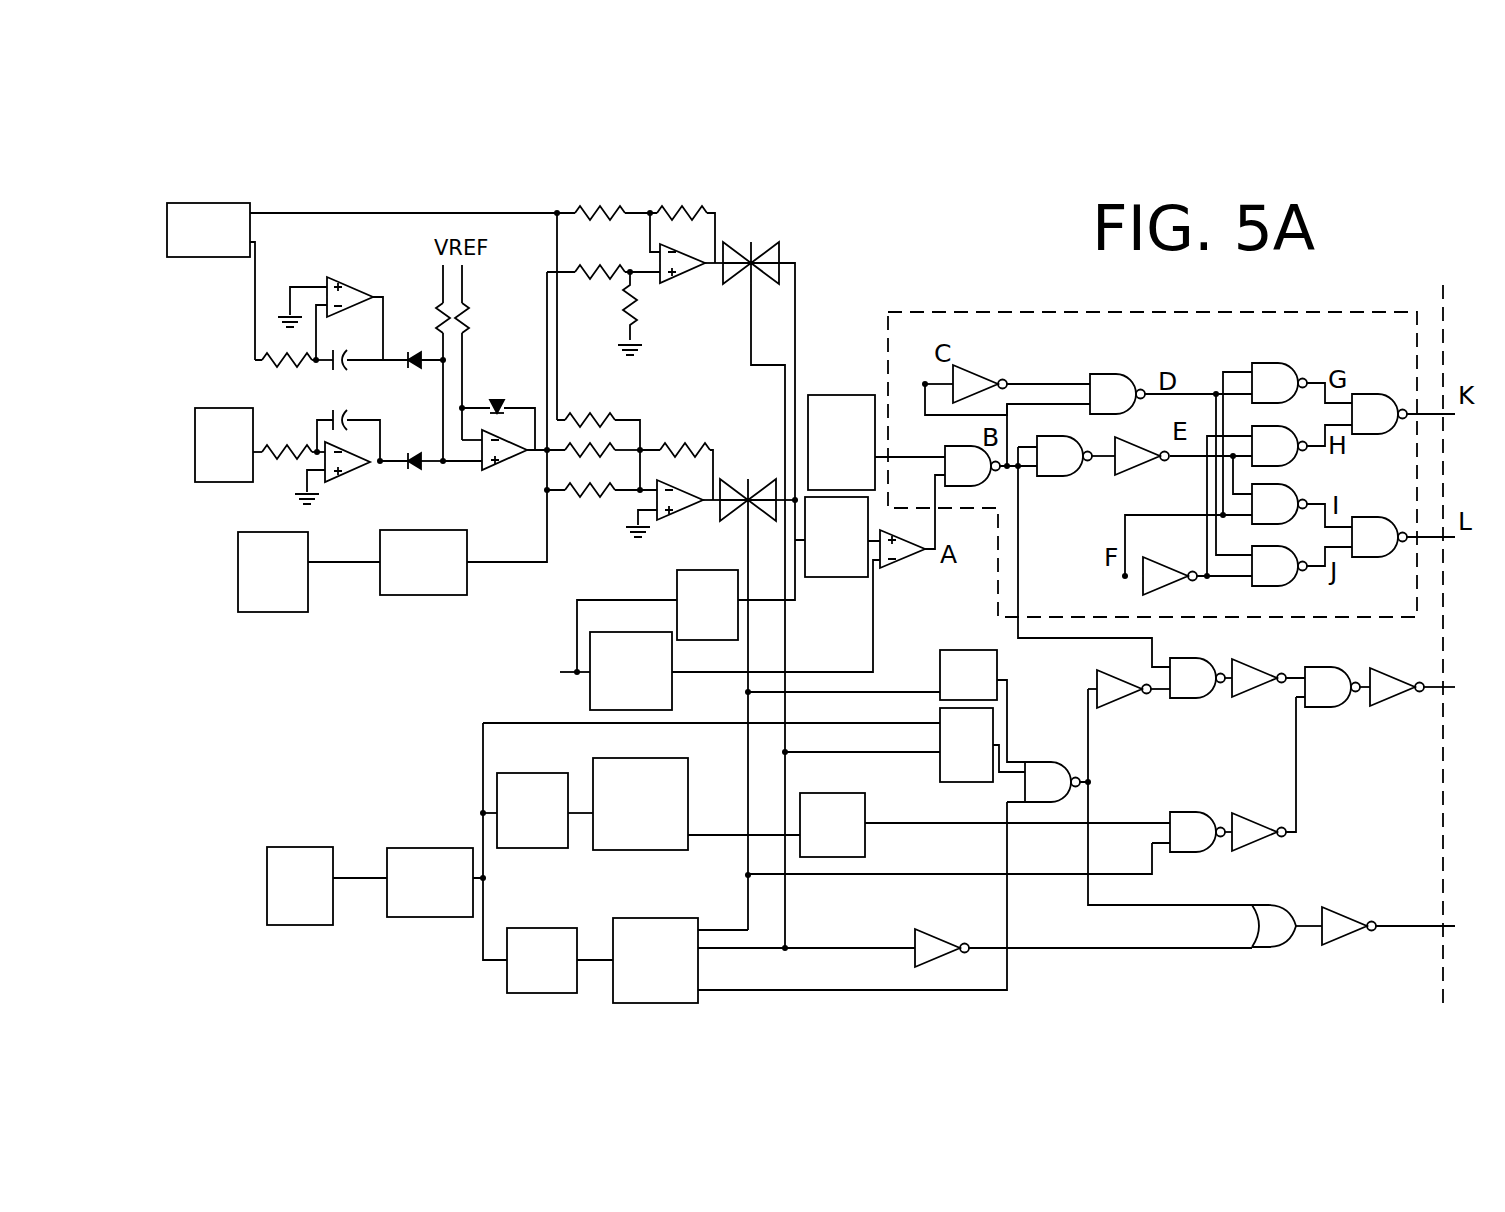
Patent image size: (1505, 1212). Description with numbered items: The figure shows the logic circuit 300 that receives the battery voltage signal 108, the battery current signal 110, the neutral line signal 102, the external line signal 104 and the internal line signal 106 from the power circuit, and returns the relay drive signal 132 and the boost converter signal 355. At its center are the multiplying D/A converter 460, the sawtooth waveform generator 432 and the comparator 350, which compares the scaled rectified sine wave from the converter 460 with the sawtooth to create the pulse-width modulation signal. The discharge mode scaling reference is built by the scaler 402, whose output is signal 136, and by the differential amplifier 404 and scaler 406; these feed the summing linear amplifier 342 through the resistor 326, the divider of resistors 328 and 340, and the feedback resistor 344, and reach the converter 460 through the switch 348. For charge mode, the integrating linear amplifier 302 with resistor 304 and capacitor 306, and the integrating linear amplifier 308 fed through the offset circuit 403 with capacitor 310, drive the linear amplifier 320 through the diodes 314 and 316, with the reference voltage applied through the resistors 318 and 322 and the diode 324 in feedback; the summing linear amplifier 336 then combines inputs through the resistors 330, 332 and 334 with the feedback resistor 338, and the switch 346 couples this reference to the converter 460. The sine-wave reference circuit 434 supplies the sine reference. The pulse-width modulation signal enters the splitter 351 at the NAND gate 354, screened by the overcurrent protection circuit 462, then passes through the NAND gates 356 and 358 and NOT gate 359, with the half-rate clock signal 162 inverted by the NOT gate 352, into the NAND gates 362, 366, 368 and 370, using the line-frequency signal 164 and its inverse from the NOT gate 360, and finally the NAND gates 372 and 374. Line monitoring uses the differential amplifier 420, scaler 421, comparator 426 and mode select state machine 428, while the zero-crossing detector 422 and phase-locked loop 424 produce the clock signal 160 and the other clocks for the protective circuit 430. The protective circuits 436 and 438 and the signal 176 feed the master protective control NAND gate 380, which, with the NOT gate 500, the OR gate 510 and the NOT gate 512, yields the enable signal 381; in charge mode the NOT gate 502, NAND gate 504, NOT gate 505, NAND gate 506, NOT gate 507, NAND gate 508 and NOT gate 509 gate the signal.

The neutral line signal 102 is at (238, 545).
The external line signal 104 is at (267, 900).
The internal line signal 106 is at (238, 582).
The battery voltage signal 108 is at (167, 232).
The battery current signal 110 is at (195, 452).
The relay drive signal 132 is at (698, 970).
The internal signal 136 is at (255, 242).
The CLOCK signal 160 is at (688, 773).
The CLOCK/2 signal 162 is at (925, 384).
The 60 Hz signal 164 is at (1078, 572).
The internal signal 176 is at (1025, 792).
The logic circuit 300 is at (366, 740).
The integrating linear amplifier 302 is at (352, 283).
The resistor 304 is at (283, 364).
The capacitor 306 is at (332, 366).
The integrating linear amplifier 308 is at (352, 470).
The capacitor 310 is at (352, 428).
The diode 314 is at (410, 367).
The diode 316 is at (418, 470).
The resistor 318 is at (436, 320).
The linear amplifier 320 is at (508, 455).
The resistor 322 is at (469, 322).
The diode 324 is at (498, 398).
The resistor 326 is at (598, 208).
The resistor 328 is at (592, 280).
The resistor 330 is at (600, 415).
The resistor 332 is at (602, 463).
The resistor 334 is at (602, 508).
The summing linear amplifier 336 is at (682, 508).
The feedback resistor 338 is at (686, 445).
The resistor 340 is at (633, 308).
The summing linear amplifier 342 is at (698, 268).
The feedback resistor 344 is at (678, 208).
The switch 346 is at (738, 487).
The switch 348 is at (745, 242).
The comparator 350 is at (908, 558).
The splitter 351 is at (1308, 310).
The NOT gate 352 is at (978, 382).
The NAND gate 354 is at (962, 474).
The boost converter signal 355 is at (1461, 672).
The NAND gate 356 is at (1118, 385).
The NAND gate 358 is at (1060, 470).
The NOT gate 359 is at (1138, 462).
The NOT gate 360 is at (1160, 580).
The NAND gate 362 is at (1280, 372).
The NAND gate 366 is at (1270, 440).
The NAND gate 368 is at (1280, 498).
The NAND gate 370 is at (1280, 572).
The NAND gate 372 is at (1372, 408).
The NAND gate 374 is at (1372, 530).
The master protective control NAND gate 380 is at (1052, 776).
The enable signal 381 is at (1438, 909).
The scaler 402 is at (208, 230).
The offset circuit 403 is at (224, 445).
The differential amplifier 404 is at (273, 572).
The scaler 406 is at (423, 562).
The differential amplifier 420 is at (300, 886).
The scaler 421 is at (430, 882).
The zero-crossing detector 422 is at (532, 810).
The phase-locked loop 424 is at (640, 804).
The comparator 426 is at (542, 960).
The mode select state machine 428 is at (655, 960).
The protective circuit 430 is at (832, 825).
The sawtooth waveform generator 432 is at (631, 671).
The sine-wave reference circuit 434 is at (707, 605).
The protective circuit 436 is at (968, 675).
The protective circuit 438 is at (966, 745).
The multiplying digital-to-analog converter 460 is at (836, 537).
The overcurrent protection circuit 462 is at (841, 442).
The NOT gate 500 is at (938, 944).
The NOT gate 502 is at (1118, 692).
The NAND gate 504 is at (1194, 688).
The NOT gate 505 is at (1252, 684).
The NAND gate 506 is at (1192, 840).
The NOT gate 507 is at (1252, 838).
The NAND gate 508 is at (1328, 694).
The NOT gate 509 is at (1388, 692).
The OR gate 510 is at (1280, 938).
The NOT gate 512 is at (1342, 930).